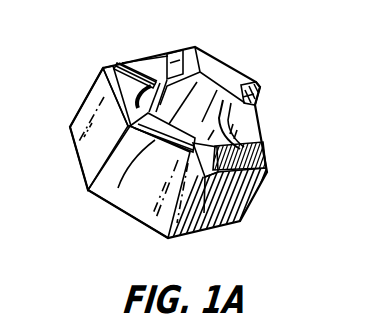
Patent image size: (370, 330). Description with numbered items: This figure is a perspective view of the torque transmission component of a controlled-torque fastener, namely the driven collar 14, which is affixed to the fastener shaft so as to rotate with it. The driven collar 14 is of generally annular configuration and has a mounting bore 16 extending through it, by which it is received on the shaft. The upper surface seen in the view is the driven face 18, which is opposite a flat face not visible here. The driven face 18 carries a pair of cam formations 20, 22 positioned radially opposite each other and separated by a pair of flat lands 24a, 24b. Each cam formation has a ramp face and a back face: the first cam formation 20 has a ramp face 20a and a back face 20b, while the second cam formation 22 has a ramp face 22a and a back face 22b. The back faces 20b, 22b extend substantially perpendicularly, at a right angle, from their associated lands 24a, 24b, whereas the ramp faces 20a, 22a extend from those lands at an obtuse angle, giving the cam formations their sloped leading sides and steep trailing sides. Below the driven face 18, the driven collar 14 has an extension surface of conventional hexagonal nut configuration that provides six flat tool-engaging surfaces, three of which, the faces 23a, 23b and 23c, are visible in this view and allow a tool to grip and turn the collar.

The driven collar 14 is at (166, 142).
The mounting bore 16 is at (199, 109).
The driven face 18 is at (272, 94).
The cam formation 20 is at (230, 64).
The ramp face 20a is at (173, 53).
The back face 20b is at (267, 100).
The cam formation 22 is at (107, 212).
The ramp face 22a is at (204, 213).
The back face 22b is at (110, 67).
The tool-engaging surface 23a is at (92, 110).
The tool-engaging surface 23b is at (145, 200).
The tool-engaging surface 23c is at (236, 212).
The flat land 24a is at (138, 62).
The flat land 24b is at (238, 150).